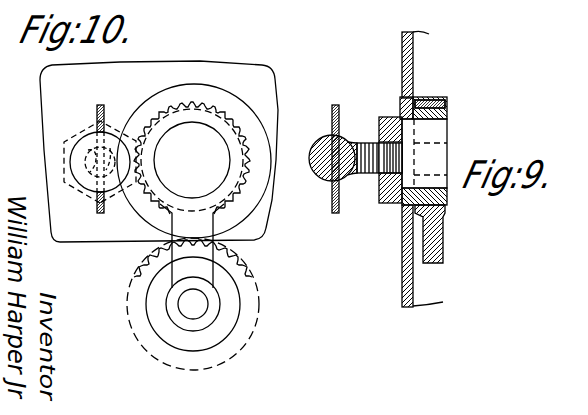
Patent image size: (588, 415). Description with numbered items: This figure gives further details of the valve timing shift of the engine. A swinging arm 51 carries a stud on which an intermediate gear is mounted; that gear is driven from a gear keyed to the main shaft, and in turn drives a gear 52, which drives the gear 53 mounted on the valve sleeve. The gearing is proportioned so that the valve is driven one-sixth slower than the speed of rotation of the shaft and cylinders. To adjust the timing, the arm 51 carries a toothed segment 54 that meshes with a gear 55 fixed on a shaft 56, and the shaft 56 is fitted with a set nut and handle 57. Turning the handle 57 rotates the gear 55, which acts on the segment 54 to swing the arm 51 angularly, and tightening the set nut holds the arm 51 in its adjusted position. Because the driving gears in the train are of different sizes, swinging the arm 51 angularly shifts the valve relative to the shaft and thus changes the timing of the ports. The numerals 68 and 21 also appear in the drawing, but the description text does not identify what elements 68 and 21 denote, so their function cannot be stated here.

In FIG. 10, the swinging arm 51 is at (192, 246).
In FIG. 9, the swinging arm 51 is at (438, 243).
In FIG. 10, the gear 52 is at (257, 318).
In FIG. 10, the gear 53 is at (207, 84).
In FIG. 10, the segment 54 is at (244, 126).
In FIG. 9, the segment 54 is at (438, 98).
In FIG. 10, the gear 55 is at (139, 193).
In FIG. 9, the gear 55 is at (440, 130).
In FIG. 10, the shaft 56 is at (90, 163).
In FIG. 9, the shaft 56 is at (378, 174).
In FIG. 10, the set nut and handle 57 is at (75, 153).
In FIG. 9, the set nut and handle 57 is at (401, 119).
In FIG. 9, the element 68 is at (308, 0).
In FIG. 9, the element 21 is at (340, 0).